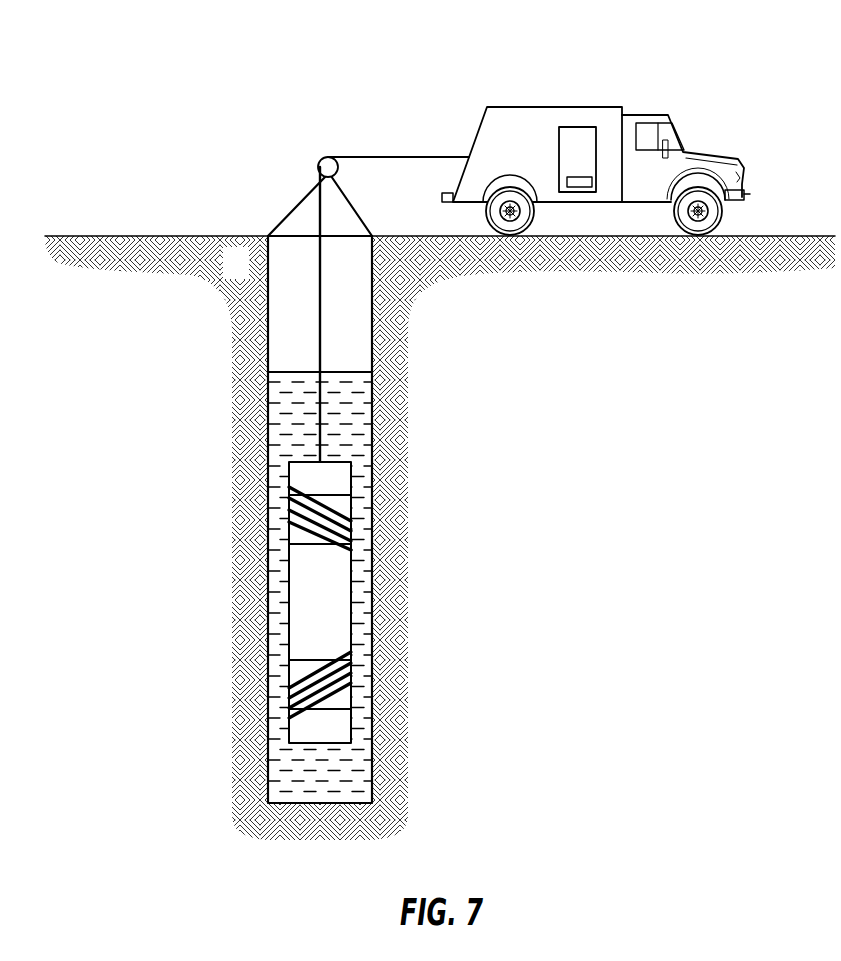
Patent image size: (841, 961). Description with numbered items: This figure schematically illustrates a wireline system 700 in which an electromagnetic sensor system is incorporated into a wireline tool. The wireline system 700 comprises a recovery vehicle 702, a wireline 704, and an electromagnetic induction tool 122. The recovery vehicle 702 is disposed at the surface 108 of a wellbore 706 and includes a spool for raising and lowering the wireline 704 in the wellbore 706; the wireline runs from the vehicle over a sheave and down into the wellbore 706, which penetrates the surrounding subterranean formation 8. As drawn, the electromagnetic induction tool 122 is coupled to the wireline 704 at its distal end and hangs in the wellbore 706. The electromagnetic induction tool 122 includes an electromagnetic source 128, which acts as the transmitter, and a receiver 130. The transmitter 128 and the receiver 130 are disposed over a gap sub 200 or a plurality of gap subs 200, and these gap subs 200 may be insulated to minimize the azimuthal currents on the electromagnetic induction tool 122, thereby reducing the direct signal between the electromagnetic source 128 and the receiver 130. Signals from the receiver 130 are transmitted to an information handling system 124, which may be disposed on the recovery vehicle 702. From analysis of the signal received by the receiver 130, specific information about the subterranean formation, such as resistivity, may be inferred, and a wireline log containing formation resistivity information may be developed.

The wireline system 700 is at (130, 65).
The recovery vehicle 702 is at (527, 107).
The information handling system 124 is at (577, 127).
The wireline 704 is at (318, 196).
The surface 108 is at (92, 226).
The subterranean formation 8 is at (246, 277).
The wellbore 706 is at (372, 348).
The receiver 130 is at (305, 499).
The gap sub 200 is at (296, 538).
The electromagnetic induction tool 122 is at (319, 601).
The electromagnetic source 128 is at (320, 702).